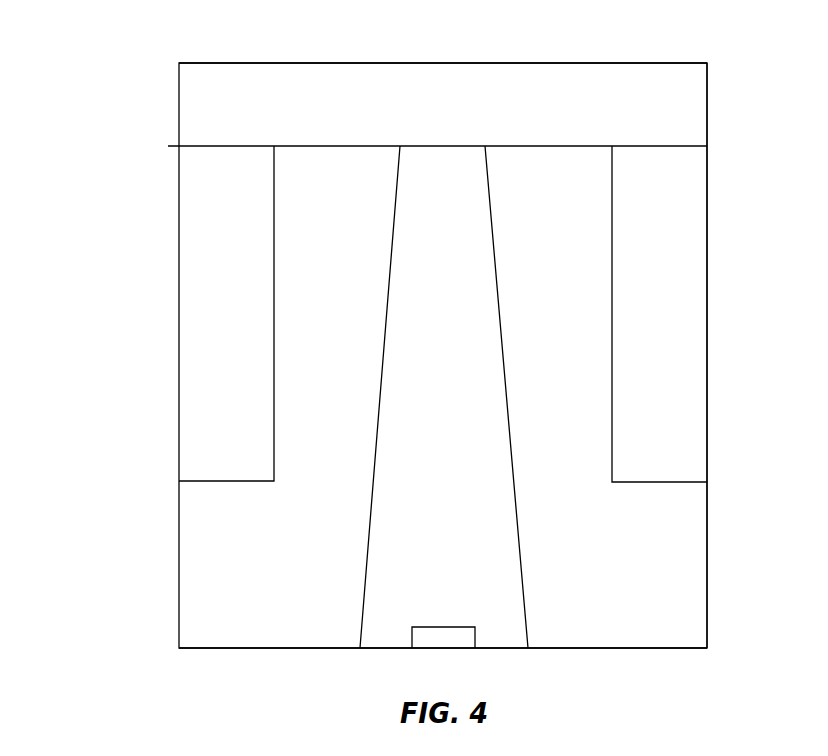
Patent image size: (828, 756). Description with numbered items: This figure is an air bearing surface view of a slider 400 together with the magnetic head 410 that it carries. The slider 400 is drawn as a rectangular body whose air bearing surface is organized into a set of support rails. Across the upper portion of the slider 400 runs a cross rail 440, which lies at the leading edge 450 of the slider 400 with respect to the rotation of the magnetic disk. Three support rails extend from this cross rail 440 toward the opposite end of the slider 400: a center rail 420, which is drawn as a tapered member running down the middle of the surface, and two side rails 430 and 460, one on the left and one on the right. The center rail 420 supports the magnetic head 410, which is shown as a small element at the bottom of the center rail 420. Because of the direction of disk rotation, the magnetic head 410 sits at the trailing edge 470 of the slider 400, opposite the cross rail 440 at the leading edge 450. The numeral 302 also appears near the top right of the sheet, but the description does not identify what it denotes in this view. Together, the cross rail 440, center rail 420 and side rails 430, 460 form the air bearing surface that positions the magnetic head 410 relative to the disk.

The slider 400 is at (80, 572).
The substrate 302 is at (697, 324).
The magnetic head 410 is at (433, 637).
The center rail 420 is at (412, 471).
The side rail 430 is at (223, 283).
The cross rail 440 is at (222, 96).
The leading edge 450 is at (250, 63).
The side rail 460 is at (686, 306).
The trailing edge 470 is at (612, 648).